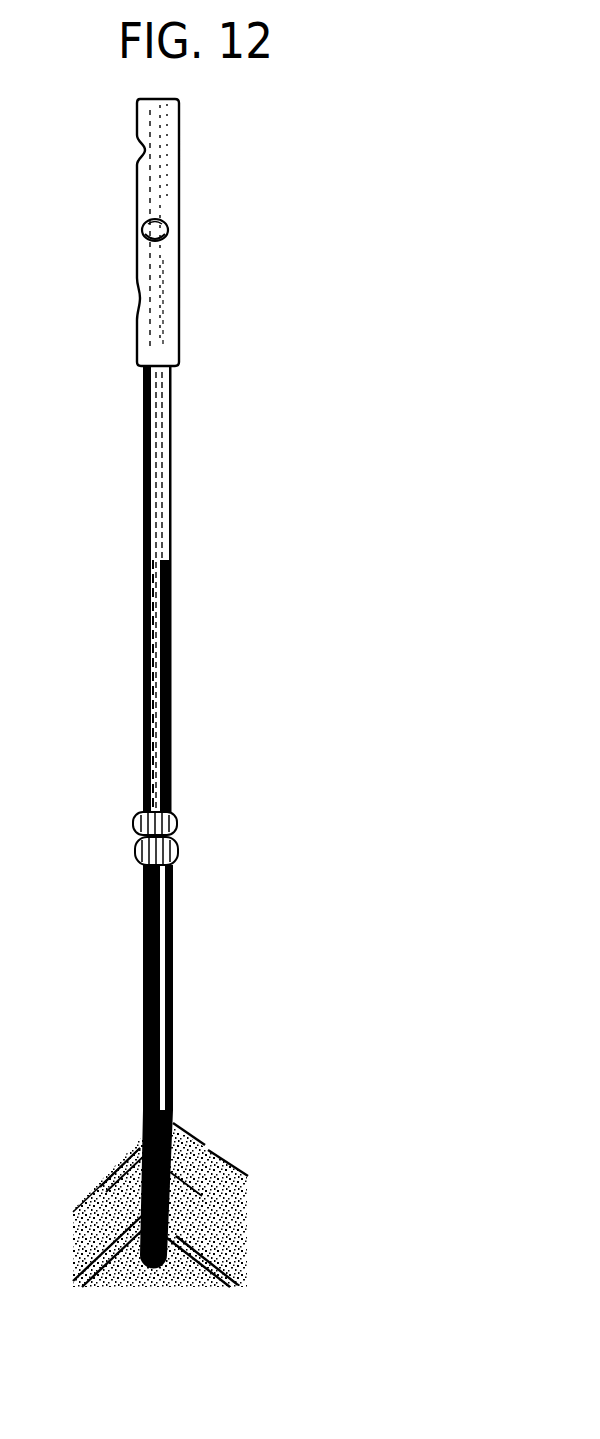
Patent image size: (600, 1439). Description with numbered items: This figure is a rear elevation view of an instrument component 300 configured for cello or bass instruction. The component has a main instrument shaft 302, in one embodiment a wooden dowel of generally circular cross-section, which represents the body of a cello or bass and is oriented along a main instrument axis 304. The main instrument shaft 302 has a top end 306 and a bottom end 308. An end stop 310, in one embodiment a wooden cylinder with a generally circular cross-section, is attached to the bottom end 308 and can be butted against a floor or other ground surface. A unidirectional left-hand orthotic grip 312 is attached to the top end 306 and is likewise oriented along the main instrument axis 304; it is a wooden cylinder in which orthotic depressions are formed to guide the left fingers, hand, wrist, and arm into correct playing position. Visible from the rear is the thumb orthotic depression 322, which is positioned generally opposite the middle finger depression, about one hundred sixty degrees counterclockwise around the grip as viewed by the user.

The instrument component 300 is at (382, 148).
The main instrument shaft 302 is at (172, 620).
The main instrument axis 304 is at (153, 1290).
The top end 306 is at (172, 375).
The bottom end 308 is at (165, 1232).
The end stop 310 is at (172, 1252).
The unidirectional left-hand orthotic grip 312 is at (180, 107).
The thumb orthotic depression 322 is at (177, 232).